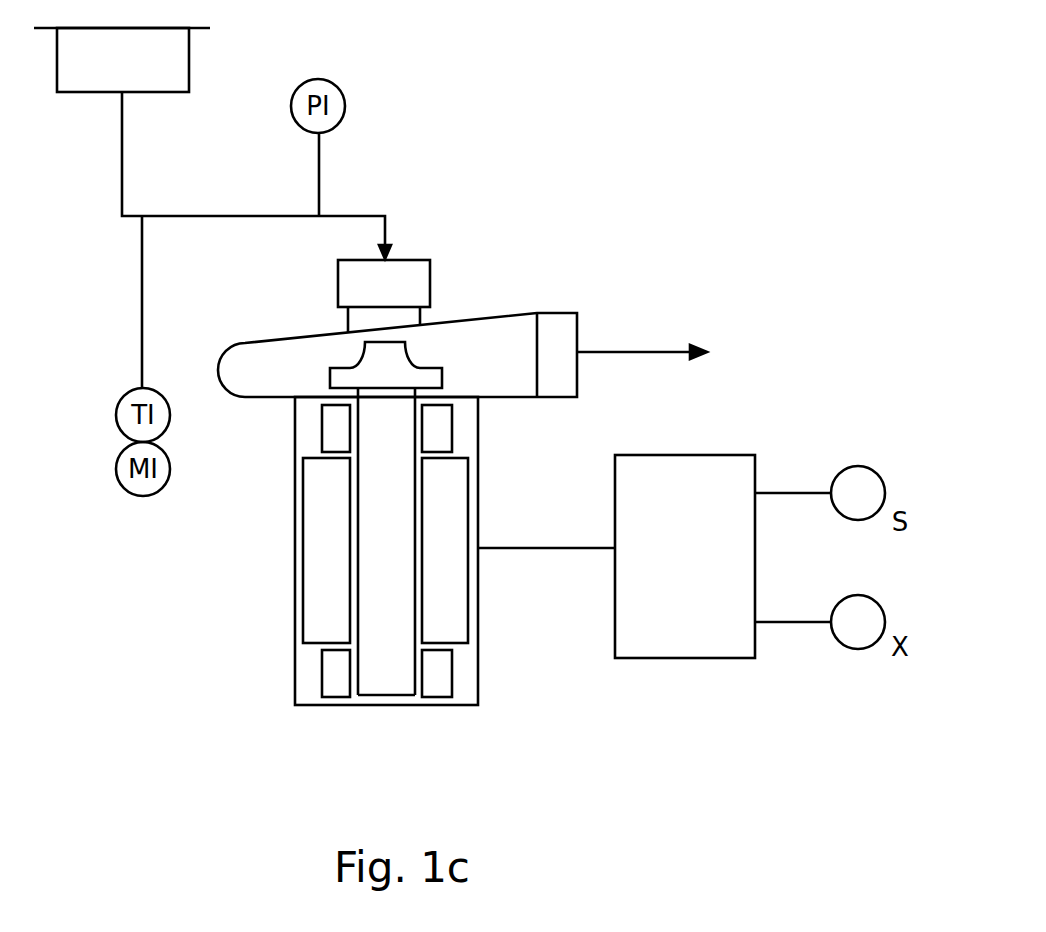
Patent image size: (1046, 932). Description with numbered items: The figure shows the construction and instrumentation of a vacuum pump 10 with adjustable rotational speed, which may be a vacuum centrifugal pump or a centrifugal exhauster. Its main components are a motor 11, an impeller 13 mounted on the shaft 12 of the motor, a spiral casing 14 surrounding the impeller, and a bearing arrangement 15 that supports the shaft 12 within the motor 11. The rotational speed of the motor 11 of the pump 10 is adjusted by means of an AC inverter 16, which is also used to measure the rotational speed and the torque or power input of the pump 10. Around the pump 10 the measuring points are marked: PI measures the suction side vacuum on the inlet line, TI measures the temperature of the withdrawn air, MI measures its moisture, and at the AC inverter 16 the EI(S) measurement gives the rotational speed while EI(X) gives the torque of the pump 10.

The vacuum pump with adjustable rotational speed 10 is at (435, 244).
The motor 11 is at (275, 542).
The shaft 12 is at (377, 677).
The impeller 13 is at (385, 360).
The spiral casing 14 is at (512, 330).
The bearing arrangement 15 is at (322, 425).
The AC inverter 16 is at (698, 647).